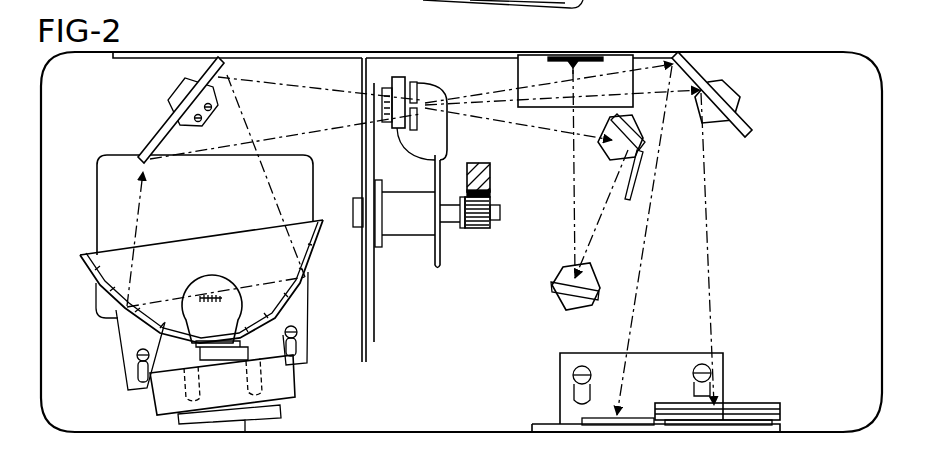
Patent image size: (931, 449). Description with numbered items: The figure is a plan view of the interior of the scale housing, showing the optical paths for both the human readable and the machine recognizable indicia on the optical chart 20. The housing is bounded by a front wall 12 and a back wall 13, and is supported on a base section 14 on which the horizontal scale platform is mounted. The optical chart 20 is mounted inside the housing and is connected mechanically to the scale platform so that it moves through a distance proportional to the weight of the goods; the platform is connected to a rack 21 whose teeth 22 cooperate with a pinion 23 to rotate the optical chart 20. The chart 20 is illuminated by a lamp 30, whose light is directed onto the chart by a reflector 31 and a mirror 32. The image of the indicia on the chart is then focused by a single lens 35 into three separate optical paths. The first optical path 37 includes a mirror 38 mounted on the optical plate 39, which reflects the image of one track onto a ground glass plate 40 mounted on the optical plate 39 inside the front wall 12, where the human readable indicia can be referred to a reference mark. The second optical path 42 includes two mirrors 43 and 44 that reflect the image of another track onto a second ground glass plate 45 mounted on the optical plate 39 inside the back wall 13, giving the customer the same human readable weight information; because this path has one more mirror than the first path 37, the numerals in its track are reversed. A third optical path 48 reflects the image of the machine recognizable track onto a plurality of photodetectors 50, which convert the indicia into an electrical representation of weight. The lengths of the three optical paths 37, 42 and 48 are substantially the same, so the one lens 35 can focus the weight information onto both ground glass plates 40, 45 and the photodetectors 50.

The front wall 12 is at (410, 434).
The back wall 13 is at (722, 50).
The base section 14 is at (441, 7).
The optical chart 20 is at (374, 322).
The rack 21 is at (490, 165).
The teeth 22 is at (492, 195).
The pinion 23 is at (477, 230).
The lamp 30 is at (210, 278).
The reflector 31 is at (88, 284).
The mirror 32 is at (157, 135).
The lens 35 is at (413, 83).
The first optical path 37 is at (487, 93).
The mirror 38 is at (688, 62).
The optical plate 39 is at (793, 63).
The ground glass plate 40 is at (622, 412).
The second optical path 42 is at (503, 128).
The mirror 43 is at (640, 146).
The mirror 44 is at (553, 300).
The second ground glass plate 45 is at (587, 57).
The third optical path 48 is at (712, 212).
The photodetectors 50 is at (735, 408).